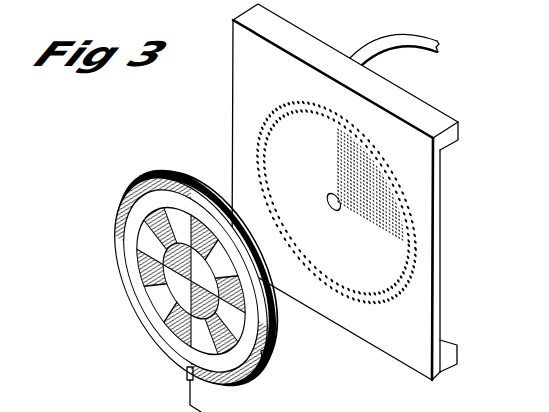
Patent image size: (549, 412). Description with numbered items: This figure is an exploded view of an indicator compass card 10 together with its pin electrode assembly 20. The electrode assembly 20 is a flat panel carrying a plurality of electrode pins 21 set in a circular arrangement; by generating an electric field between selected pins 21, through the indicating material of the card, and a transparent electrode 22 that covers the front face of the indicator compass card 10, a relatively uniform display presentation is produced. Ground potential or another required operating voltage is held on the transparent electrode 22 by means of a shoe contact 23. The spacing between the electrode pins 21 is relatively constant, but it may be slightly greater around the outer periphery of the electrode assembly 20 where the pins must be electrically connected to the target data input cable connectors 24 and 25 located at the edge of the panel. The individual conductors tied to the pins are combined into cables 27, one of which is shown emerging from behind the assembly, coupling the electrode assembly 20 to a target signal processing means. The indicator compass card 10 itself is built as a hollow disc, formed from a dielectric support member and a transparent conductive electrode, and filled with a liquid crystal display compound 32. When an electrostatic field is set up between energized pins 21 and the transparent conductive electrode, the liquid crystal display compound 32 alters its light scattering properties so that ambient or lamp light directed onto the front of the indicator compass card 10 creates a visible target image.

The indicator compass card 10 is at (179, 271).
The electrode assembly 20 is at (231, 56).
The electrode pins 21 is at (266, 124).
The transparent electrode 22 is at (266, 360).
The shoe contact 23 is at (194, 375).
The target data input cable connector 24 is at (461, 134).
The target data input cable connector 25 is at (456, 356).
The cables 27 is at (383, 34).
The liquid crystal display compound 32 is at (277, 318).